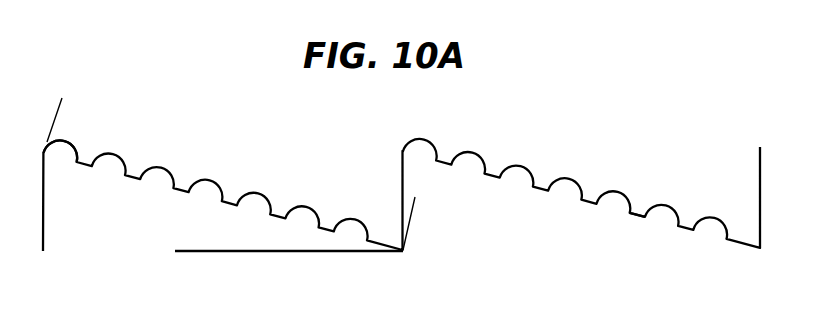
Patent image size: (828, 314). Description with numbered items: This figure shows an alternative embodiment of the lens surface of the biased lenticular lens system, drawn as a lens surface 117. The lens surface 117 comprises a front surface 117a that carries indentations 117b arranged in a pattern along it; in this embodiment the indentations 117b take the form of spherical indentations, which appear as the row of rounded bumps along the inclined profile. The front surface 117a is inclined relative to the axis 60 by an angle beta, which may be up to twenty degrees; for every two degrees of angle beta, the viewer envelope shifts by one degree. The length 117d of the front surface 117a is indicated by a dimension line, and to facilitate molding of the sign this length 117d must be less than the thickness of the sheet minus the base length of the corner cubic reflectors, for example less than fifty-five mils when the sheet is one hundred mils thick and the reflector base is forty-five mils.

The lens surface 117 is at (530, 213).
The front surface 117a is at (633, 222).
The indentations 117b is at (110, 170).
The length 117d is at (415, 197).
The axis 60 is at (245, 258).
The angle beta is at (199, 196).